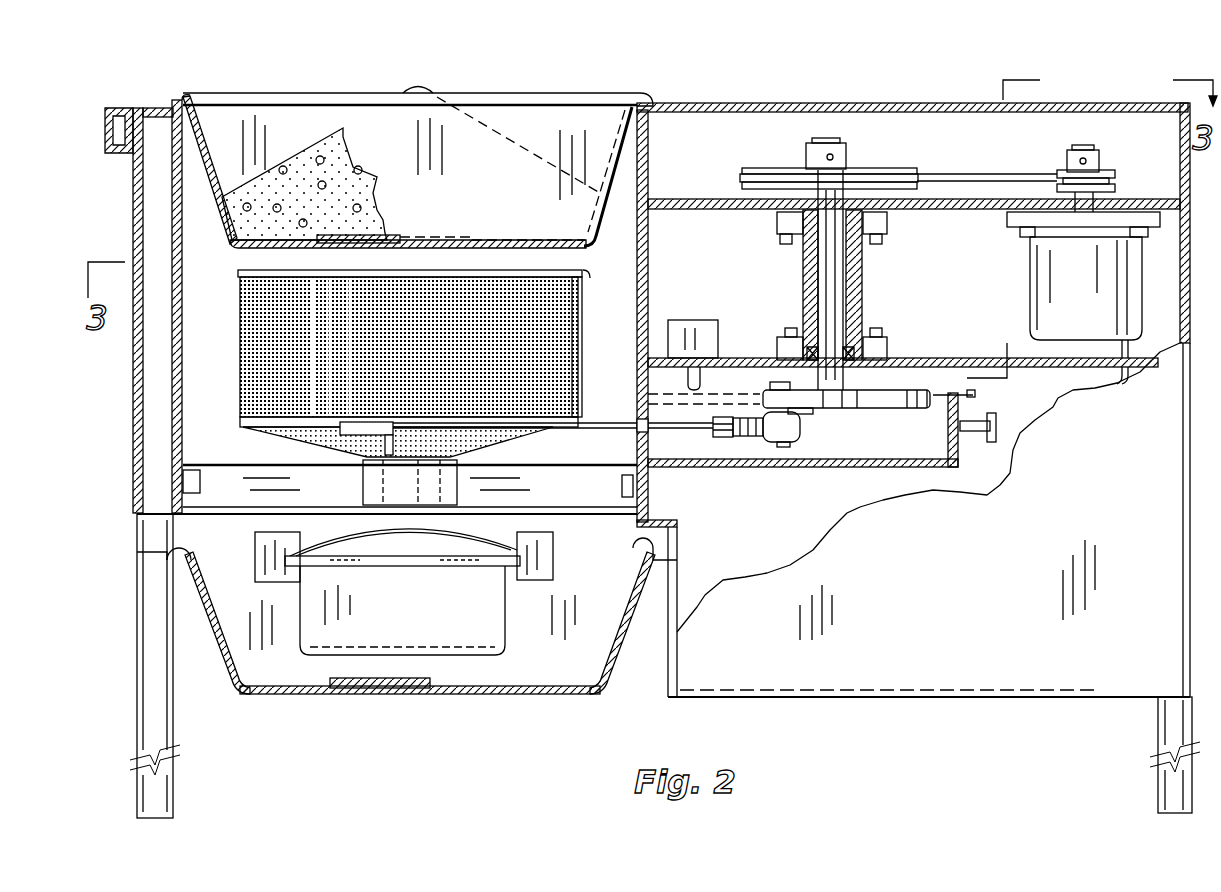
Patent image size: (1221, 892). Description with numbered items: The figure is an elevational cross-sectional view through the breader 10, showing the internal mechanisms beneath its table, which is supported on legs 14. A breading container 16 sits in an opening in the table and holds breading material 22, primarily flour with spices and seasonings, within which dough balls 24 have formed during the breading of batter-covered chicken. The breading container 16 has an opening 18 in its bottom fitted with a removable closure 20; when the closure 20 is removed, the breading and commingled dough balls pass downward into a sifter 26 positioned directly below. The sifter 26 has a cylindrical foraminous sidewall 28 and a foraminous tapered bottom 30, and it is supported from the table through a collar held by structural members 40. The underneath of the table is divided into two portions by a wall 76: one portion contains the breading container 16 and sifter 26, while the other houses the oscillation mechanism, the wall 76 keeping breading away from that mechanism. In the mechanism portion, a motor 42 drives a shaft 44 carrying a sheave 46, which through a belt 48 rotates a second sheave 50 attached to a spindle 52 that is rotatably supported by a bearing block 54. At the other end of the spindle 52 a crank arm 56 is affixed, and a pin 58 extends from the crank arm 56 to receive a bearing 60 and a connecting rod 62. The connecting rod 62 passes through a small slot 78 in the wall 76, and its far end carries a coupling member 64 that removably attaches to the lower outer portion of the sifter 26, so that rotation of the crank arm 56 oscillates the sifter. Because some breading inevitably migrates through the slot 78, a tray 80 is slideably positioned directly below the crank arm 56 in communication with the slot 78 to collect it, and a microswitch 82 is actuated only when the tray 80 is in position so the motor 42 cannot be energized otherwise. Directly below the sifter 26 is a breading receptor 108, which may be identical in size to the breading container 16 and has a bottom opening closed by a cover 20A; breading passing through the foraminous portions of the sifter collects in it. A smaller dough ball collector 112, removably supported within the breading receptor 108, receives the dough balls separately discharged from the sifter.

The breader 10 is at (1097, 88).
The legs 14 is at (157, 716).
The breading container 16 is at (625, 100).
The opening 18 is at (340, 247).
The closure 20 is at (398, 214).
The cover 20A is at (420, 694).
The breading material 22 is at (352, 142).
The dough balls 24 is at (284, 166).
The sifter 26 is at (233, 277).
The cylindrical foraminous sidewall 28 is at (270, 373).
The foraminous tapered bottom 30 is at (493, 438).
The structural members 40 is at (203, 477).
The motor 42 is at (1060, 252).
The shaft 44 is at (1083, 147).
The sheave 46 is at (1060, 170).
The belt 48 is at (953, 177).
The second sheave 50 is at (880, 170).
The spindle 52 is at (847, 302).
The bearing block 54 is at (863, 260).
The crank arm 56 is at (850, 409).
The pin 58 is at (797, 409).
The bearing 60 is at (767, 441).
The connecting rod 62 is at (608, 426).
The coupling member 64 is at (347, 433).
The wall 76 is at (648, 243).
The slot 78 is at (640, 435).
The tray 80 is at (880, 467).
The microswitch 82 is at (717, 337).
The breading receptor 108 is at (612, 653).
The dough ball collector 112 is at (480, 637).